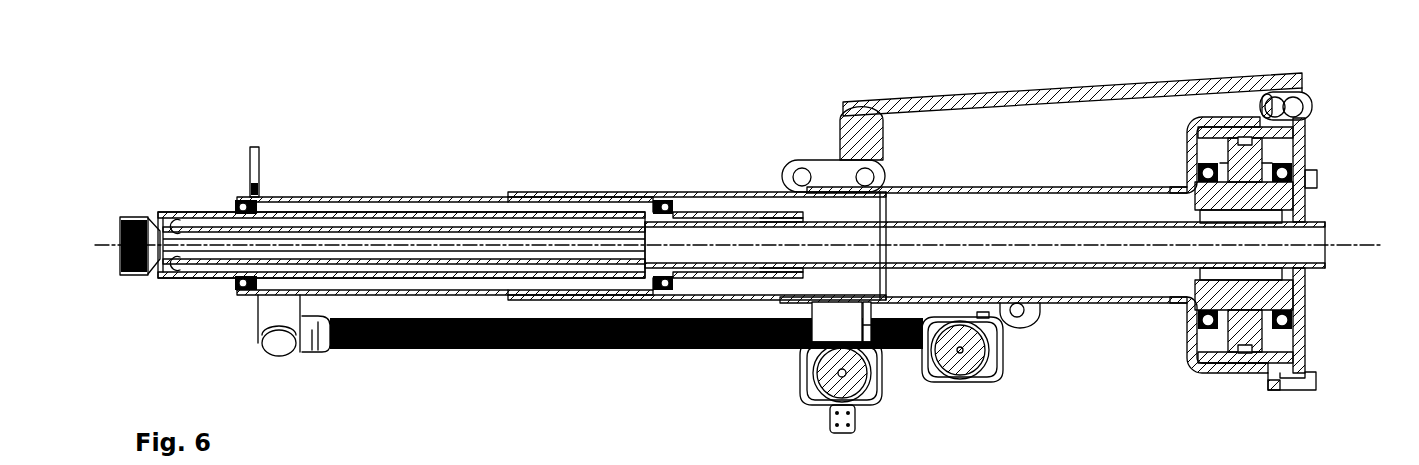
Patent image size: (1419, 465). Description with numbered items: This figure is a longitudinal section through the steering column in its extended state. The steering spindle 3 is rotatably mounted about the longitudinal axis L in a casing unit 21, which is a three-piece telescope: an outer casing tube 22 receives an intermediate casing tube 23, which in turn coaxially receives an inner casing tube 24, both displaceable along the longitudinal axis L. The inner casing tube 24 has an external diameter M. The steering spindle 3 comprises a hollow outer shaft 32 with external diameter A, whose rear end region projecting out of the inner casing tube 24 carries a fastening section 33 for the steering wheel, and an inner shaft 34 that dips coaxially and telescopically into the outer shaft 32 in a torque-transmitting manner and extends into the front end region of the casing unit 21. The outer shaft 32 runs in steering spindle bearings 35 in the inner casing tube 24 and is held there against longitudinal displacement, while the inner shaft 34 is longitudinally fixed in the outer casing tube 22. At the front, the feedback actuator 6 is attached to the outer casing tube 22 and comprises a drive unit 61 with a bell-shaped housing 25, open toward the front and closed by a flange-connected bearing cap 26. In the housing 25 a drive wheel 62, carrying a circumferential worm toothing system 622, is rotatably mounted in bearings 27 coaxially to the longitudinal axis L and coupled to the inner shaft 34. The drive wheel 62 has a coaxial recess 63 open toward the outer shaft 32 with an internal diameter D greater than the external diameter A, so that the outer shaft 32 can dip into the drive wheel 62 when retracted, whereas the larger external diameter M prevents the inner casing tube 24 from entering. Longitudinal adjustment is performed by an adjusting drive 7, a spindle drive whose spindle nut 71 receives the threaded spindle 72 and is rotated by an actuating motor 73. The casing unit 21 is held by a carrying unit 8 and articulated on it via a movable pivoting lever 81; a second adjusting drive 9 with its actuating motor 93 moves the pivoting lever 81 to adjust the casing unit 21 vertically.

The fastening section 33 is at (130, 218).
The steering spindle bearings 35 is at (243, 200).
The inner casing tube 24 is at (362, 202).
The outer shaft 32 is at (455, 215).
The casing unit 21 is at (572, 195).
The intermediate casing tube 23 is at (660, 196).
The steering spindle 3 is at (778, 207).
The pivoting lever 81 is at (838, 175).
The carrying unit 8 is at (1158, 105).
The bearings 27 is at (1210, 163).
The feedback actuator 6 is at (1338, 90).
The outer casing tube 22 is at (1043, 188).
The inner shaft 34 is at (1105, 222).
The bearing cap 26 is at (1317, 173).
The drive wheel 62 is at (1257, 195).
The recess 63 is at (1260, 278).
The toothing system 622 is at (1263, 342).
The drive unit 61 is at (1202, 378).
The housing 25 is at (1243, 373).
The threaded spindle 72 is at (600, 349).
The adjusting drive 7 is at (793, 378).
The actuating motor 73 is at (828, 388).
The spindle nut 71 is at (870, 408).
The adjusting drive 9 is at (1000, 375).
The actuating motor 93 is at (973, 362).
The external diameter M is at (345, 304).
The external diameter A is at (740, 293).
The internal diameter D is at (1222, 276).
The longitudinal axis L is at (1357, 243).